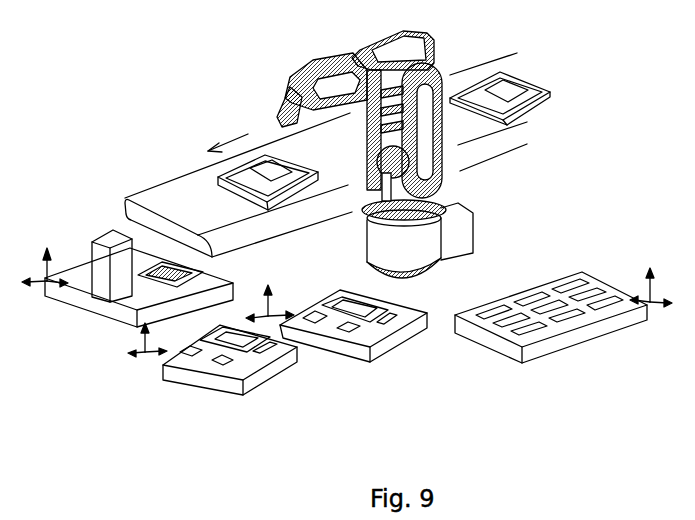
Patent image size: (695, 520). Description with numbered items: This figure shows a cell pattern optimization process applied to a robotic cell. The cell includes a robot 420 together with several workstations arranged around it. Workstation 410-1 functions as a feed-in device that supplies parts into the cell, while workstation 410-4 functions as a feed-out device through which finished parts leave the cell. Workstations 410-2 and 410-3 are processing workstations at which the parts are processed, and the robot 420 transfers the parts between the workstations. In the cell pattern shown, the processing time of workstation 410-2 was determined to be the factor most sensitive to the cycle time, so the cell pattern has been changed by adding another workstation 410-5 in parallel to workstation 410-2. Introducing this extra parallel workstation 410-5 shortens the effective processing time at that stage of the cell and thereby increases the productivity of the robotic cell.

The workstation 410-1 is at (195, 192).
The workstation 410-2 is at (127, 284).
The workstation 410-3 is at (336, 337).
The workstation 410-4 is at (563, 318).
The workstation 410-5 is at (212, 364).
The robot 420 is at (437, 50).